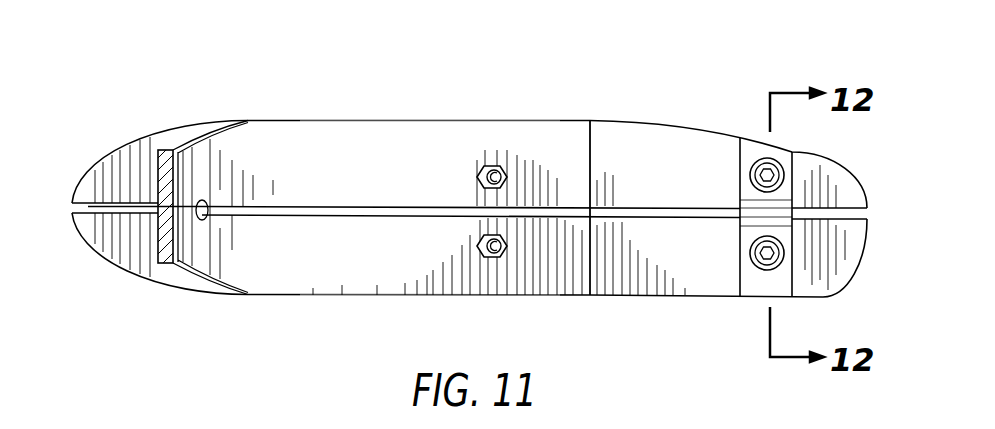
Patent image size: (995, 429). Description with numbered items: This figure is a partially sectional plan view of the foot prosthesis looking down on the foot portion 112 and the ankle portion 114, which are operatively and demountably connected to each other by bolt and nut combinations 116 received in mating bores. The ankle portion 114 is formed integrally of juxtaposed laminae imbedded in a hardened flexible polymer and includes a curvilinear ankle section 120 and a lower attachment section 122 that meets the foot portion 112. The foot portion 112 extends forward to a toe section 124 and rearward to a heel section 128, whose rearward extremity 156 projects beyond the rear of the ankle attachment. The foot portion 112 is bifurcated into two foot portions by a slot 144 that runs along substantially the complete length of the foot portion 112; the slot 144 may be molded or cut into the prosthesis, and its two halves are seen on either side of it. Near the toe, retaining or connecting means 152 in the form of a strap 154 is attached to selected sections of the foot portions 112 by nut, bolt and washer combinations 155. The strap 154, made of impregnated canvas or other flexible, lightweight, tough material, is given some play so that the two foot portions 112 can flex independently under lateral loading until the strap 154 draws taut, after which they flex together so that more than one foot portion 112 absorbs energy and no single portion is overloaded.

The foot portion 112 is at (734, 122).
The ankle portion 114 is at (209, 106).
The bolt and nut combinations 116 is at (485, 168).
The curvilinear ankle section 120 is at (348, 133).
The lower attachment section 122 is at (545, 133).
The toe section 124 is at (682, 140).
The heel section 128 is at (146, 145).
The slot 144 is at (644, 196).
The retaining or connecting means 152 is at (735, 312).
The strap 154 is at (800, 200).
The nut, bolt and washer combinations 155 is at (771, 160).
The rearward extremity 156 is at (113, 160).